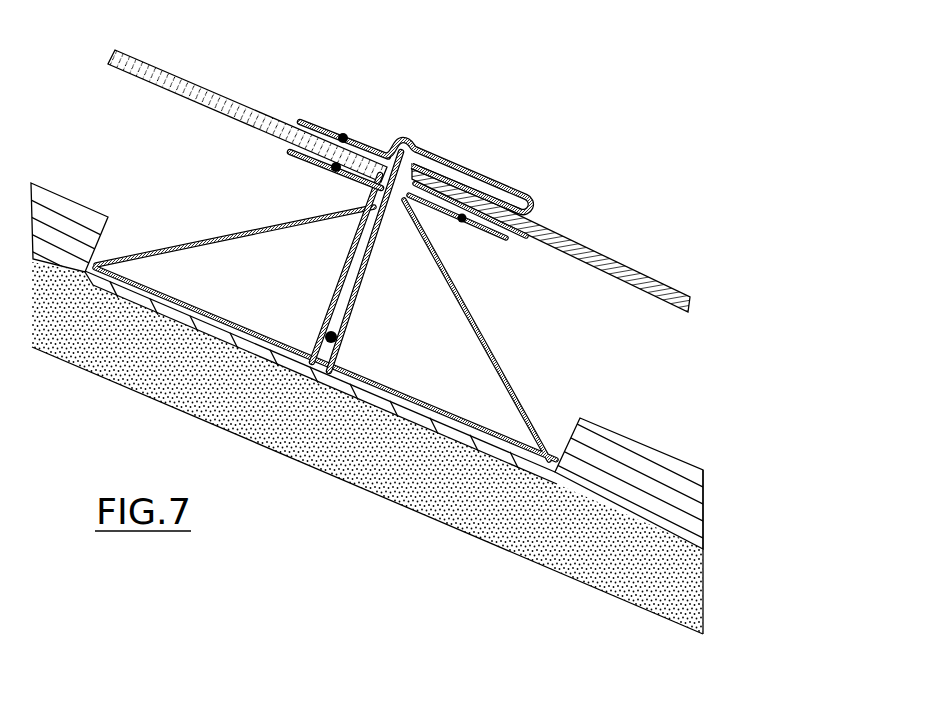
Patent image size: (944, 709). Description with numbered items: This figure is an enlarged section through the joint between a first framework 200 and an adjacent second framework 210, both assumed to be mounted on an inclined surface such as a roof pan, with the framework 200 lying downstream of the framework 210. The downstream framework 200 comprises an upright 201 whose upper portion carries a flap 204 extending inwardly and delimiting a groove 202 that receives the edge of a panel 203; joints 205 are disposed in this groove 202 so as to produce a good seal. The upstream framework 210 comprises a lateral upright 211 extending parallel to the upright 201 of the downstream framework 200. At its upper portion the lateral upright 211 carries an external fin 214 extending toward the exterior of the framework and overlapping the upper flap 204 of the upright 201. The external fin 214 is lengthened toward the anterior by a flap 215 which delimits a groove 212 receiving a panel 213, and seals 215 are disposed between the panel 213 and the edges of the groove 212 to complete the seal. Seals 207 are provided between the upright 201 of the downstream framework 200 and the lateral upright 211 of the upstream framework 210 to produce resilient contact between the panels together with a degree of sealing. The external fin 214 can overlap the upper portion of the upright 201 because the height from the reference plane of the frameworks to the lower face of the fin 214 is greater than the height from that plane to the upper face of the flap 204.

The first framework 200 is at (462, 432).
The upright 201 is at (403, 398).
The groove 202 is at (528, 224).
The panel 203 is at (630, 267).
The flap 204 is at (521, 215).
The joints 205 is at (422, 214).
The seals 207 is at (404, 139).
The second framework 210 is at (147, 298).
The lateral upright 211 is at (342, 321).
The groove 212 is at (289, 126).
The panel 213 is at (199, 88).
The external fin 214 is at (501, 180).
The flap 215 is at (344, 136).